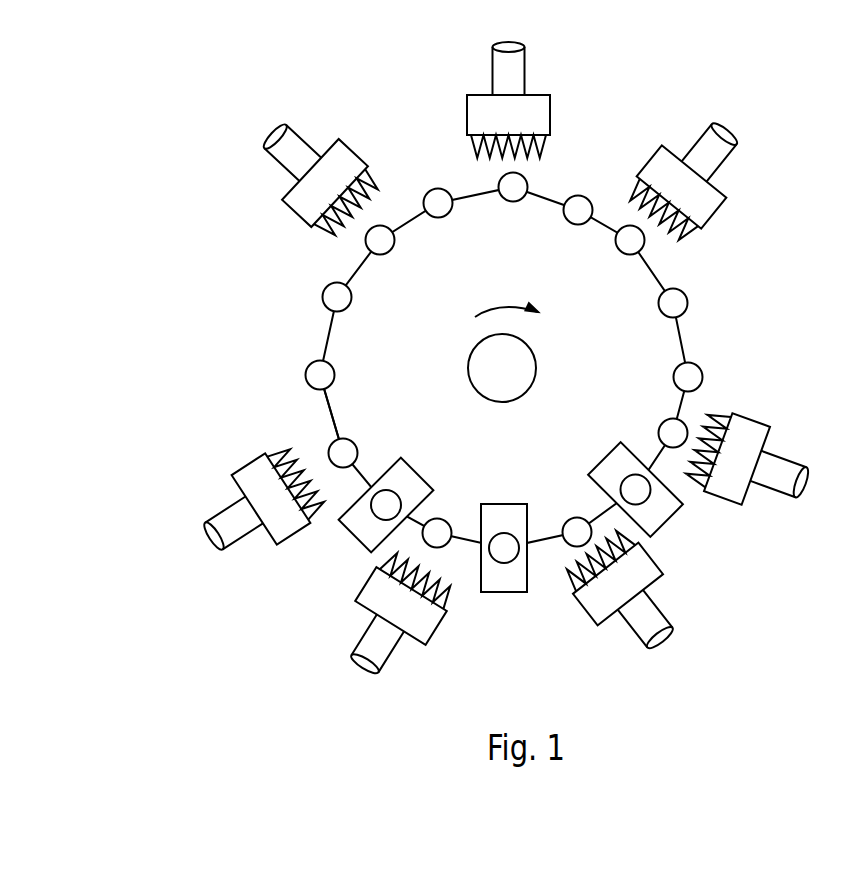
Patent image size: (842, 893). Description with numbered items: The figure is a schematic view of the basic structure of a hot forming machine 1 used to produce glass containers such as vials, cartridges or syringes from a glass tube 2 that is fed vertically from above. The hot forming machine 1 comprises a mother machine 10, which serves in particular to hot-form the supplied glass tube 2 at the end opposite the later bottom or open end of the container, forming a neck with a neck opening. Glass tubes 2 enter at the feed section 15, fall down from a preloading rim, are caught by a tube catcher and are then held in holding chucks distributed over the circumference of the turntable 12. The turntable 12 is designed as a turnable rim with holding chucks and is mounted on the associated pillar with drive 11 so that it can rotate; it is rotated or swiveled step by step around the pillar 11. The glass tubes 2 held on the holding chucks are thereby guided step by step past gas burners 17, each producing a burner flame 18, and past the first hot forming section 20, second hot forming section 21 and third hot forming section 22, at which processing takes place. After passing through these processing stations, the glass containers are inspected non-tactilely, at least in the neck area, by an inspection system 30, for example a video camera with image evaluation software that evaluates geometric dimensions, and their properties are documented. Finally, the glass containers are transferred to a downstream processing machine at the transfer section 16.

The hot forming machine 1 is at (117, 93).
The mother machine 10 is at (370, 100).
The pillar with drive 11 is at (518, 352).
The turntable 12 is at (687, 338).
The feed section 15 is at (320, 312).
The transfer section 16 is at (323, 412).
The gas burner 17 is at (708, 208).
The burner flame 18 is at (637, 180).
The glass tube 2 is at (680, 303).
The first hot forming section 20 is at (663, 515).
The second hot forming section 21 is at (502, 582).
The third hot forming section 22 is at (363, 532).
The non-tactile inspection system 30 is at (232, 513).